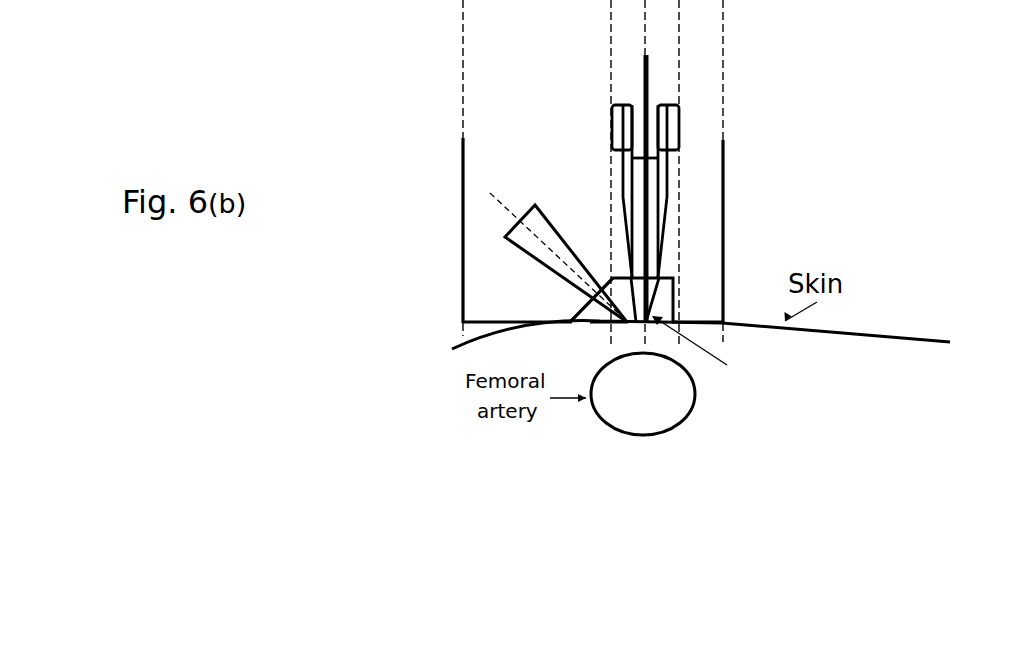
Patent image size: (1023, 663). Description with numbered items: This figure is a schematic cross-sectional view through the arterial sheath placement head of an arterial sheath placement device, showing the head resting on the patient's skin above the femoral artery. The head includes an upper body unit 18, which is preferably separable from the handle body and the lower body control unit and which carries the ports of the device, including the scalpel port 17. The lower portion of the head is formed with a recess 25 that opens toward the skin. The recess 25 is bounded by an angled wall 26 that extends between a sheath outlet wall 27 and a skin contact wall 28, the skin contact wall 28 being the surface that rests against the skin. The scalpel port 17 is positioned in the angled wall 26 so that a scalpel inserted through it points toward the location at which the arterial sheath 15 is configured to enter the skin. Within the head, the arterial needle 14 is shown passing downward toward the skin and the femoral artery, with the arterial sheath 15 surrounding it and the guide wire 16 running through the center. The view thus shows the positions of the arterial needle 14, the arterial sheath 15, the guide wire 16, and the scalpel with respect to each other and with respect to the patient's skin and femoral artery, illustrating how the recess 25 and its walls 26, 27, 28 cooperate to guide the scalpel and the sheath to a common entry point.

The arterial needle 14 is at (653, 237).
The arterial sheath 15 is at (663, 127).
The guide wire 16 is at (650, 103).
The scalpel port 17 is at (548, 230).
The upper body unit 18 is at (500, 282).
The recess 25 is at (664, 303).
The angled wall 26 is at (577, 309).
The sheath outlet wall 27 is at (607, 318).
The skin contact wall 28 is at (478, 326).